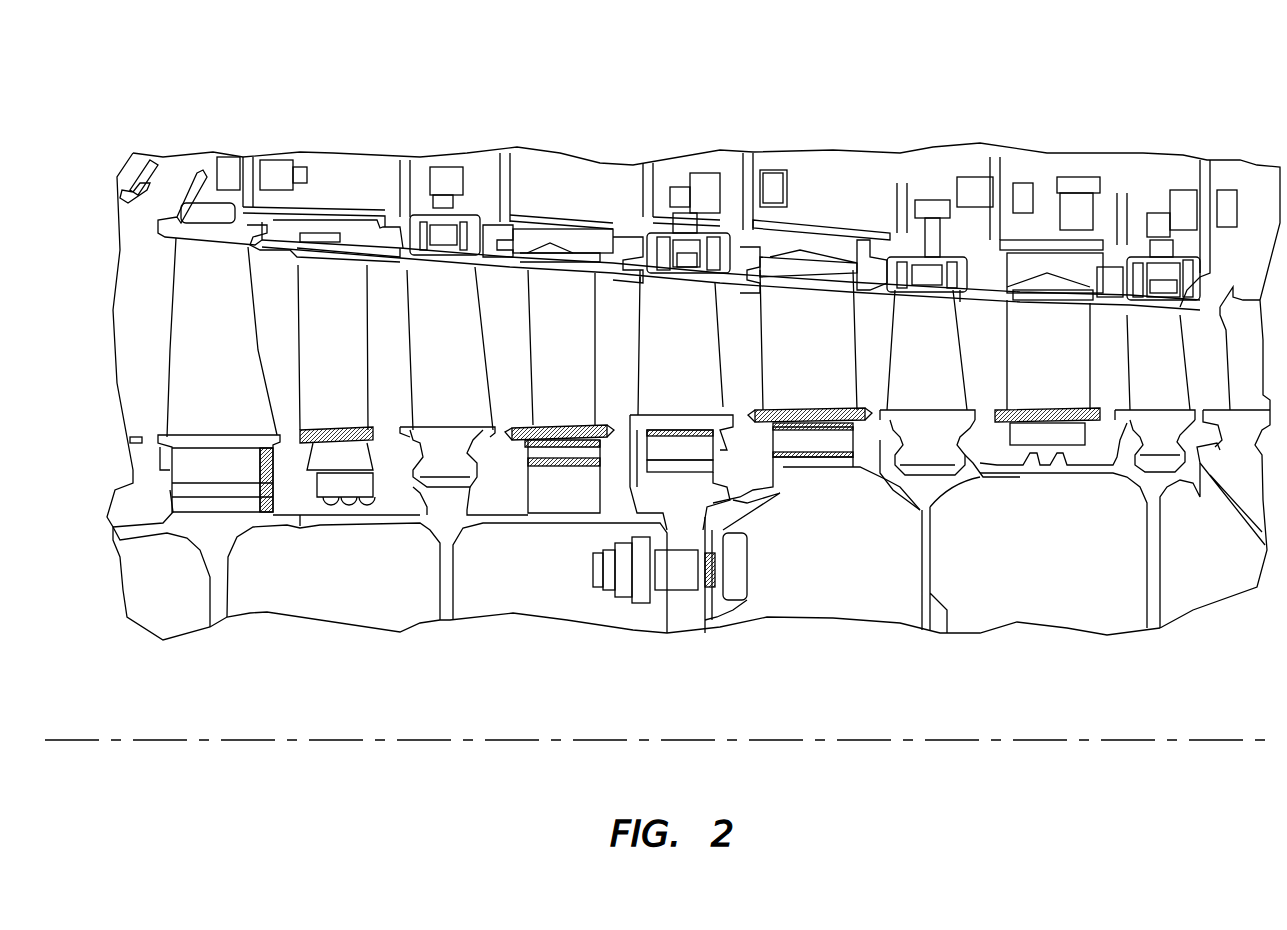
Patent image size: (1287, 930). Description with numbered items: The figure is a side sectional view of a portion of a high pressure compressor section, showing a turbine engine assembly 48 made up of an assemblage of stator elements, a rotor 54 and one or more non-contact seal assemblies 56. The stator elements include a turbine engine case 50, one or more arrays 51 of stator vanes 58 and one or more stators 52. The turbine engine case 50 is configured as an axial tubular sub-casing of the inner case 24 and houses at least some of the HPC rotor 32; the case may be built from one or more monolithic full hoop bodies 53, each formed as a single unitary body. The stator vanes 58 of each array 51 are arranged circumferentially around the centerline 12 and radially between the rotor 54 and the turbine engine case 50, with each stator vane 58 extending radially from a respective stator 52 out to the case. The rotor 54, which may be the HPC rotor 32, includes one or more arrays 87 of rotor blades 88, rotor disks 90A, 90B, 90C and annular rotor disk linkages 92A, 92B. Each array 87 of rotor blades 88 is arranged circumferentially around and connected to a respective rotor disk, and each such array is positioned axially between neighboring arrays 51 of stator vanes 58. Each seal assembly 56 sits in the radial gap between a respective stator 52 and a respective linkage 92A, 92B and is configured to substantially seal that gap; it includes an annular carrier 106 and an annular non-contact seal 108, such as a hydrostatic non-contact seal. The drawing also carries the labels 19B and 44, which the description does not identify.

The centerline 12 is at (1187, 747).
The turbine section 19B is at (900, 72).
The inner case 24 is at (693, 374).
The turbine engine case 50 is at (627, 217).
The HPC rotor 32 is at (162, 612).
The rotor 54 is at (200, 605).
The inlet vane 44 is at (148, 342).
The turbine engine assembly 48 is at (923, 123).
The array of stator vanes 51 is at (752, 312).
The stator 52 is at (527, 430).
The monolithic full hoop body 53 is at (340, 207).
The non-contact seal assembly 56 is at (570, 514).
The stator vane 58 is at (548, 376).
The array of rotor blades 87 is at (405, 287).
The rotor blade 88 is at (423, 371).
The rotor disk 90A is at (437, 587).
The rotor disk 90B is at (687, 610).
The rotor disk 90C is at (943, 590).
The annular rotor disk linkage 92A is at (523, 523).
The annular rotor disk linkage 92B is at (778, 513).
The annular carrier 106 is at (573, 448).
The annular non-contact seal 108 is at (545, 501).